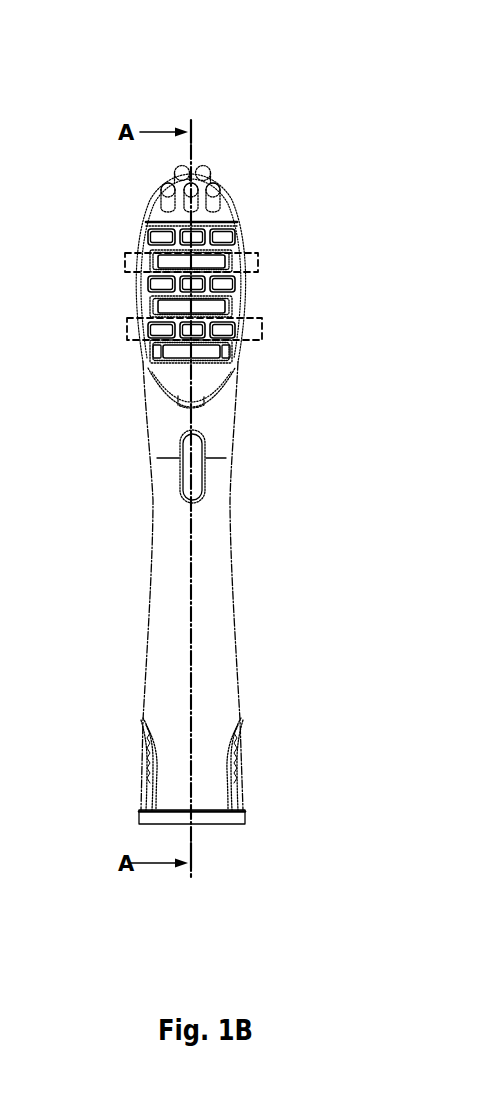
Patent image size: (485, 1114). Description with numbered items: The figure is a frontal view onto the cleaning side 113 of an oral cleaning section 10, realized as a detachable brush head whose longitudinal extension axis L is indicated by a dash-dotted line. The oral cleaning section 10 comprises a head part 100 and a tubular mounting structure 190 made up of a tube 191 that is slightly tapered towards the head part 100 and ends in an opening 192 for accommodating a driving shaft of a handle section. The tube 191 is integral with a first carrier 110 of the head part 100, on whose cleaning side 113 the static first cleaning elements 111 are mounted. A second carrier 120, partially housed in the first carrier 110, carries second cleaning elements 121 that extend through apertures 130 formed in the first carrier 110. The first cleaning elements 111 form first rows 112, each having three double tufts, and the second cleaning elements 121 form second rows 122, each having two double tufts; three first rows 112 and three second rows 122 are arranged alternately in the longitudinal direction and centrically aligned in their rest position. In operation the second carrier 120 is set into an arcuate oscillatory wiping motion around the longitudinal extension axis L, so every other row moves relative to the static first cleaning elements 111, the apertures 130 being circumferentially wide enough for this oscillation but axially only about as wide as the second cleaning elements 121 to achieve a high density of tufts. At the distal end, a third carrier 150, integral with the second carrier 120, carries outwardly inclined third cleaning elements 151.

The oral cleaning section 10 is at (332, 96).
The head part 100 is at (122, 173).
The first carrier 110 is at (128, 300).
The first cleaning elements 111 is at (218, 240).
The first rows 112 is at (262, 330).
The cleaning side 113 is at (203, 375).
The second carrier 120 is at (158, 303).
The second cleaning elements 121 is at (177, 350).
The second rows 122 is at (128, 255).
The apertures 130 is at (235, 300).
The third carrier 150 is at (238, 203).
The third cleaning elements 151 is at (201, 166).
The mounting structure 190 is at (256, 629).
The tube 191 is at (145, 650).
The opening 192 is at (228, 832).
The longitudinal extension axis L is at (193, 548).